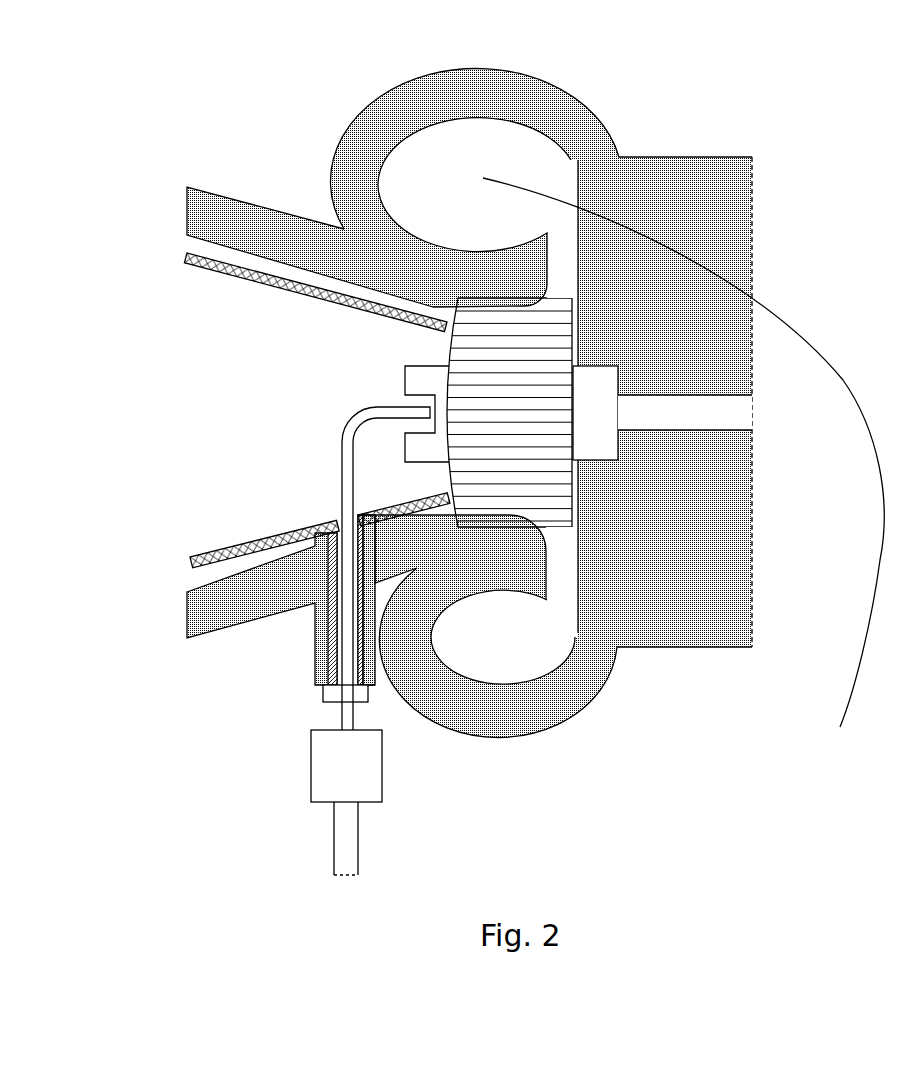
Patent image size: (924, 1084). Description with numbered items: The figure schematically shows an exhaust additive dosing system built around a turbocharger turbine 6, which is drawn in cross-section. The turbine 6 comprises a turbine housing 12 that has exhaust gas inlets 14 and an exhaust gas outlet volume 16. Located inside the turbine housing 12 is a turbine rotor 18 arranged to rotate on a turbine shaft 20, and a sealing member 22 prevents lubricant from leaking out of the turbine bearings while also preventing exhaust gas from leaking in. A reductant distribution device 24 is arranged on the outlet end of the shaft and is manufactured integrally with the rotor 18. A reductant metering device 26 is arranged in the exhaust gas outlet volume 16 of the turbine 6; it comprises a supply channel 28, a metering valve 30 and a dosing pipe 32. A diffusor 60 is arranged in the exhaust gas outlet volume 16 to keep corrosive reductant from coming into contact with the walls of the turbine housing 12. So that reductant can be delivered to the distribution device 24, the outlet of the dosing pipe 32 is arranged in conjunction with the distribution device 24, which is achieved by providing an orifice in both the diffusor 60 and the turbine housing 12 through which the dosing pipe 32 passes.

The turbocharger turbine 6 is at (802, 112).
The turbine housing 12 is at (668, 188).
The exhaust gas inlets 14 is at (515, 632).
The exhaust gas outlet volume 16 is at (243, 337).
The turbine rotor 18 is at (523, 425).
The turbine shaft 20 is at (698, 425).
The sealing member 22 is at (608, 425).
The reductant distribution device 24 is at (418, 397).
The reductant metering device 26 is at (305, 829).
The supply channel 28 is at (358, 847).
The metering valve 30 is at (360, 779).
The dosing pipe 32 is at (341, 498).
The diffusor 60 is at (190, 553).